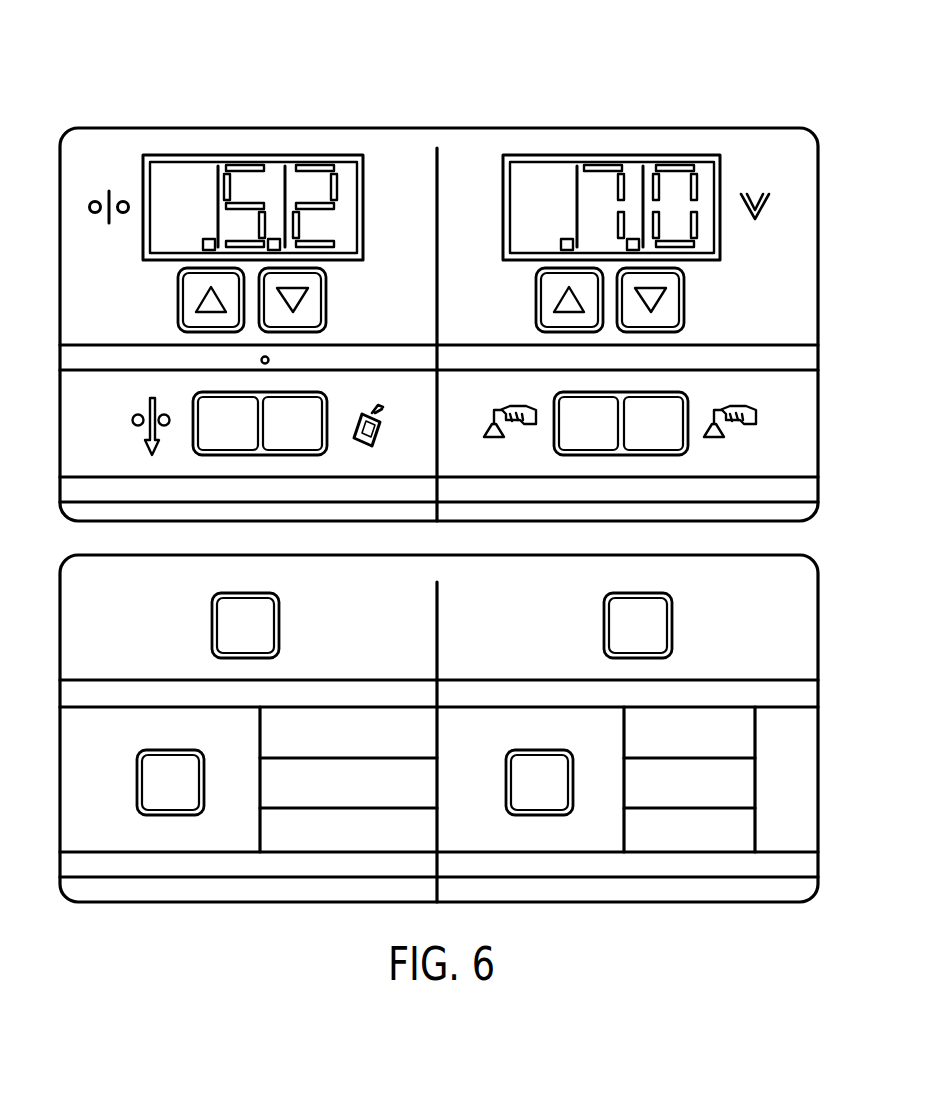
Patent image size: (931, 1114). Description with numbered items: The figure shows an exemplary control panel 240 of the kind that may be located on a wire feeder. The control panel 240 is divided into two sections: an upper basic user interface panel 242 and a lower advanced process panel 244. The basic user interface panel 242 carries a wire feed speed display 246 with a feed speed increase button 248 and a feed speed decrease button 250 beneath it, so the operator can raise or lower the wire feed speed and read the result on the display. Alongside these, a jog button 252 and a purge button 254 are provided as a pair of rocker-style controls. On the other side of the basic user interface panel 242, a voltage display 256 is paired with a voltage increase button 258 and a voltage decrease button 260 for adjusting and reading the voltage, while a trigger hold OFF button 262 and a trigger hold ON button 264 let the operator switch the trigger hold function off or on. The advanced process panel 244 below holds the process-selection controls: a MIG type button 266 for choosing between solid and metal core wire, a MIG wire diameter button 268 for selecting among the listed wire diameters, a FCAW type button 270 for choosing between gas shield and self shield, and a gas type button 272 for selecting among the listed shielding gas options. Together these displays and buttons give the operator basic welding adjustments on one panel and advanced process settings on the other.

The control panel 240 is at (364, 82).
The basic user interface panel 242 is at (438, 147).
The advanced process panel 244 is at (440, 572).
The wire feed speed display 246 is at (247, 158).
The feed speed increase button 248 is at (198, 298).
The feed speed decrease button 250 is at (305, 299).
The jog button 252 is at (208, 405).
The purge button 254 is at (313, 405).
The voltage display 256 is at (630, 158).
The voltage increase button 258 is at (556, 298).
The voltage decrease button 260 is at (663, 299).
The trigger hold OFF button 262 is at (569, 405).
The trigger hold ON button 264 is at (673, 405).
The MIG type button 266 is at (253, 606).
The MIG wire diameter button 268 is at (162, 762).
The FCAW type button 270 is at (647, 606).
The gas type button 272 is at (532, 762).